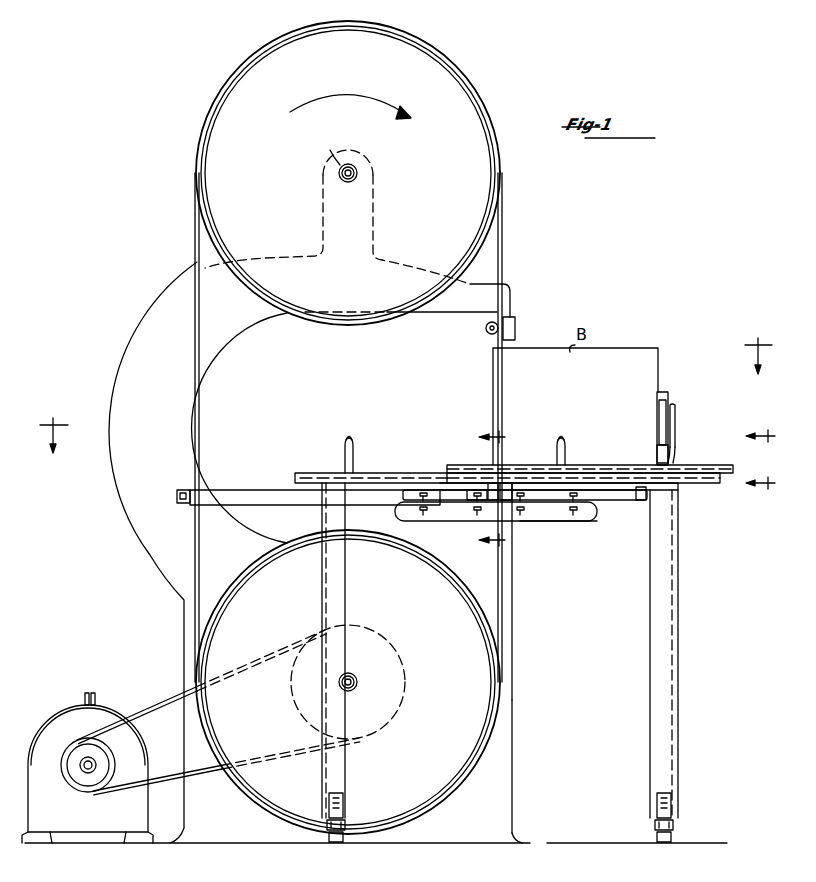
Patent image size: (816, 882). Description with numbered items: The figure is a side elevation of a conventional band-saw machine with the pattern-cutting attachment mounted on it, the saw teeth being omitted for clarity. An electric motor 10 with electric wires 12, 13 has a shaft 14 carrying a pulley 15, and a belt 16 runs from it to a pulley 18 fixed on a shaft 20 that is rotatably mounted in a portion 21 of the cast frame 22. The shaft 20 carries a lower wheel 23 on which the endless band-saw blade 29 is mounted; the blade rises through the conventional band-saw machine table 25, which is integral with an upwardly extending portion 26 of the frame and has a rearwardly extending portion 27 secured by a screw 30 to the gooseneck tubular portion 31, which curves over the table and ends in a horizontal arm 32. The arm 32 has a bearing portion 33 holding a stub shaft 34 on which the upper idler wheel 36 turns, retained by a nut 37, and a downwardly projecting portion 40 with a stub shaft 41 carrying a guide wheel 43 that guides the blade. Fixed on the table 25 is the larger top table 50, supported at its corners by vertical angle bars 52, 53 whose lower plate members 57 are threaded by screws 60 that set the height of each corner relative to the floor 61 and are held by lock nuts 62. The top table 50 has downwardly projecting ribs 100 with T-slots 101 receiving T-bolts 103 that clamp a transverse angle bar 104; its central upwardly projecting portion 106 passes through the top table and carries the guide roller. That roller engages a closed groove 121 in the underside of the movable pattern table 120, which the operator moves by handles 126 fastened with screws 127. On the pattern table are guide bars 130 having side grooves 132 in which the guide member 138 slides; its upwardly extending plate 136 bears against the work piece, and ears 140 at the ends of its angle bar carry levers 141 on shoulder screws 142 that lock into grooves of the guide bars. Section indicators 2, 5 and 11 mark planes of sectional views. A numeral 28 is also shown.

The electric motor 10 is at (112, 706).
The electric wire 12 is at (86, 692).
The electric wire 13 is at (95, 692).
The shaft 14 is at (97, 765).
The pulley 15 is at (68, 740).
The belt 16 is at (158, 707).
The pulley 18 is at (366, 636).
The shaft 20 is at (357, 680).
The portion of cast frame 21 is at (514, 714).
The cast frame 22 is at (516, 771).
The lower wheel 23 is at (418, 808).
The band-saw machine table 25 is at (678, 504).
The upwardly extending portion 26 is at (458, 527).
The rearwardly extending portion 27 is at (236, 490).
The hub nut 28 is at (357, 685).
The band-saw blade 29 is at (512, 622).
The screw 30 is at (178, 502).
The gooseneck tubular portion 31 is at (214, 348).
The arm 32 is at (432, 312).
The bearing portion 33 is at (376, 198).
The stub shaft 34 is at (357, 170).
The upper idler wheel 36 is at (470, 118).
The nut 37 is at (340, 163).
The downwardly projecting portion 40 is at (514, 318).
The stub shaft 41 is at (515, 331).
The guide wheel 43 is at (488, 333).
The top table 50 is at (640, 494).
The angle bar 52 is at (675, 665).
The angle bar 53 is at (322, 582).
The plate member 57 is at (345, 812).
The screw 60 is at (328, 840).
The floor 61 is at (590, 844).
The lock nut 62 is at (343, 832).
The rib 100 is at (455, 491).
The T-slot 101 is at (476, 492).
The T-bolt 103 is at (420, 510).
The angle bar 104 is at (541, 523).
The upwardly projecting portion 106 is at (512, 490).
The pattern table 120 is at (331, 473).
The groove 121 is at (494, 488).
The handle 126 is at (353, 460).
The screw 127 is at (349, 438).
The guide bar 130 is at (733, 468).
The groove 132 is at (722, 480).
The plate 136 is at (668, 392).
The guide member 138 is at (658, 410).
The ear 140 is at (657, 452).
The lever 141 is at (676, 423).
The shoulder screw 142 is at (676, 460).
The section line 2 is at (406, 411).
The section line 5 is at (767, 461).
The section line 11 is at (505, 490).